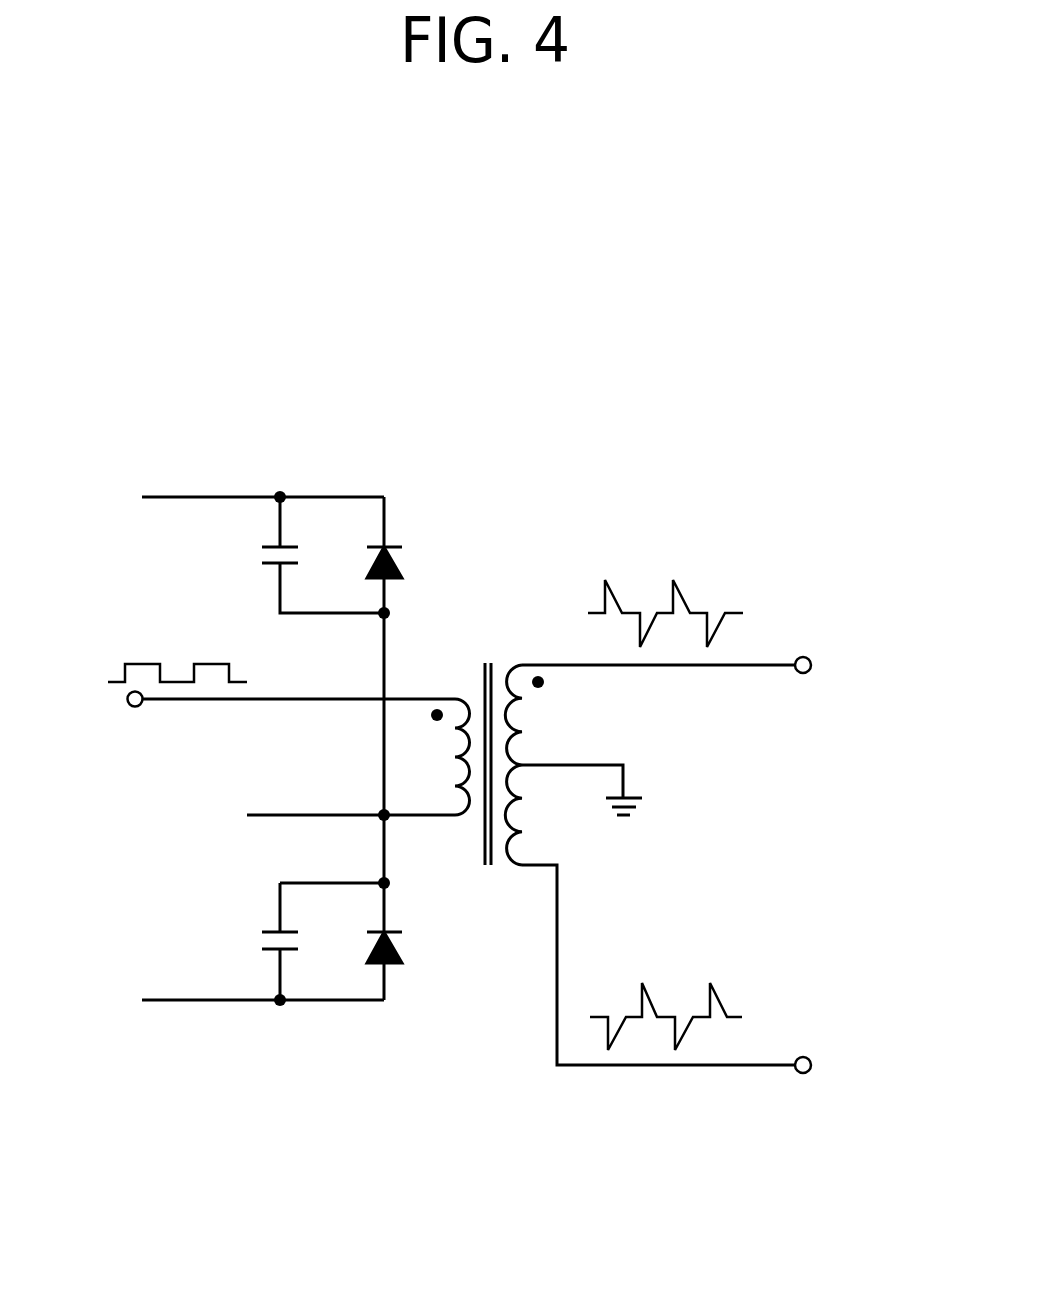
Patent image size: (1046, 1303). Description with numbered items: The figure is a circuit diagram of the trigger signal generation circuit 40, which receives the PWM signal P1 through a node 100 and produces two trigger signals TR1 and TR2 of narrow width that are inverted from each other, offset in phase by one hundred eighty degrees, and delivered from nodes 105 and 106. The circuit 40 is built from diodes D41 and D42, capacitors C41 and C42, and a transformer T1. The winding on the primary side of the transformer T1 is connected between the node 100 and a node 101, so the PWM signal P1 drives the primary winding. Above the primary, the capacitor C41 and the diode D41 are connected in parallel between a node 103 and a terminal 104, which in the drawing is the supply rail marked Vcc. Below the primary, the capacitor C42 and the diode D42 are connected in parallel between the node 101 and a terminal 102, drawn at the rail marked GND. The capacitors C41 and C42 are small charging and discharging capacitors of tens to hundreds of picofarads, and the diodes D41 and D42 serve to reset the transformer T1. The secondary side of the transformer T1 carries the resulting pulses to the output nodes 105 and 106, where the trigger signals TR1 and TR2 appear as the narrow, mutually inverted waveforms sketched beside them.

The trigger signal generation circuit 40 is at (480, 1163).
The node 100 is at (134, 708).
The node 101 is at (380, 813).
The terminal 102 is at (281, 1009).
The node 103 is at (380, 618).
The terminal 104 is at (281, 490).
The node 105 is at (811, 662).
The node 106 is at (811, 1063).
The capacitor C41 is at (259, 561).
The capacitor C42 is at (259, 948).
The diode D41 is at (400, 556).
The diode D42 is at (402, 954).
The transformer T1 is at (536, 743).
The PWM signal P1 is at (281, 705).
The trigger signal TR1 is at (674, 622).
The trigger signal TR2 is at (675, 965).
The power supply Vcc is at (229, 497).
The ground GND is at (225, 1000).